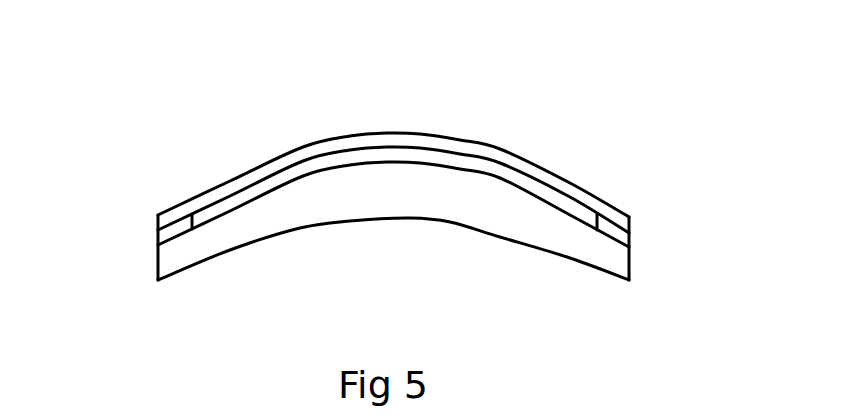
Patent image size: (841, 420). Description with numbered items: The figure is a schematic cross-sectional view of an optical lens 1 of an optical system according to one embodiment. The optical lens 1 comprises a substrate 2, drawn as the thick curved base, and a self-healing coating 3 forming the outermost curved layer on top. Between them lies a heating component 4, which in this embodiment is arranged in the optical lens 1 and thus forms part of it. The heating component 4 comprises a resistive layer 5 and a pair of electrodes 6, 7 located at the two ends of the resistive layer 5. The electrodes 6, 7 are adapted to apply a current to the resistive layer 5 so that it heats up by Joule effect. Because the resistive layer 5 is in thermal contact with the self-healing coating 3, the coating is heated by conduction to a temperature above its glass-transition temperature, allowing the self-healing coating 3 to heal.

The optical lens 1 is at (391, 159).
The substrate 2 is at (340, 207).
The self-healing coating 3 is at (298, 151).
The heating component 4 is at (433, 153).
The resistive layer 5 is at (236, 192).
The electrode 6 is at (165, 232).
The electrode 7 is at (621, 233).